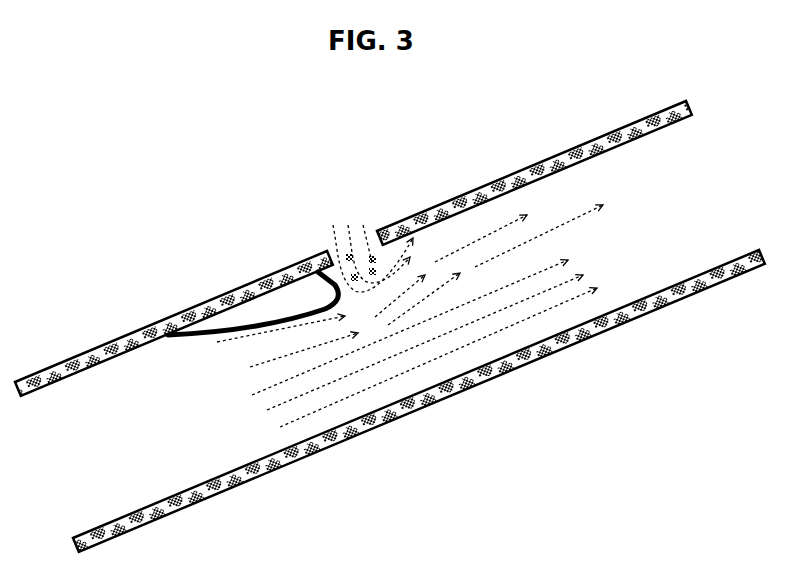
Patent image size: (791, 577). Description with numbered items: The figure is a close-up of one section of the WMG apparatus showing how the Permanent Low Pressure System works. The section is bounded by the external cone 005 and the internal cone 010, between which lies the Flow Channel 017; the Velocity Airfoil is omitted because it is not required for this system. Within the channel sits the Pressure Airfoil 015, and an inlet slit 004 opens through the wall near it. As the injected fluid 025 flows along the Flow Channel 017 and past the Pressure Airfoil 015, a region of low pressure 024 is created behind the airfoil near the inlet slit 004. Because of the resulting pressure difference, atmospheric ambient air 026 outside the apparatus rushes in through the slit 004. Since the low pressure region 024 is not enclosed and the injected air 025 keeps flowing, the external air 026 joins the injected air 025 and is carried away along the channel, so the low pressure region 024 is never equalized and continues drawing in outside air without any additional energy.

The external cone 005 is at (530, 167).
The internal cone 010 is at (600, 335).
The Pressure Airfoil 015 is at (283, 298).
The inlet slit 004 is at (338, 245).
The region of low pressure 024 is at (336, 271).
The atmospheric ambient air 026 is at (335, 207).
The injected fluid 025 is at (240, 381).
The Flow Channel 017 is at (670, 205).